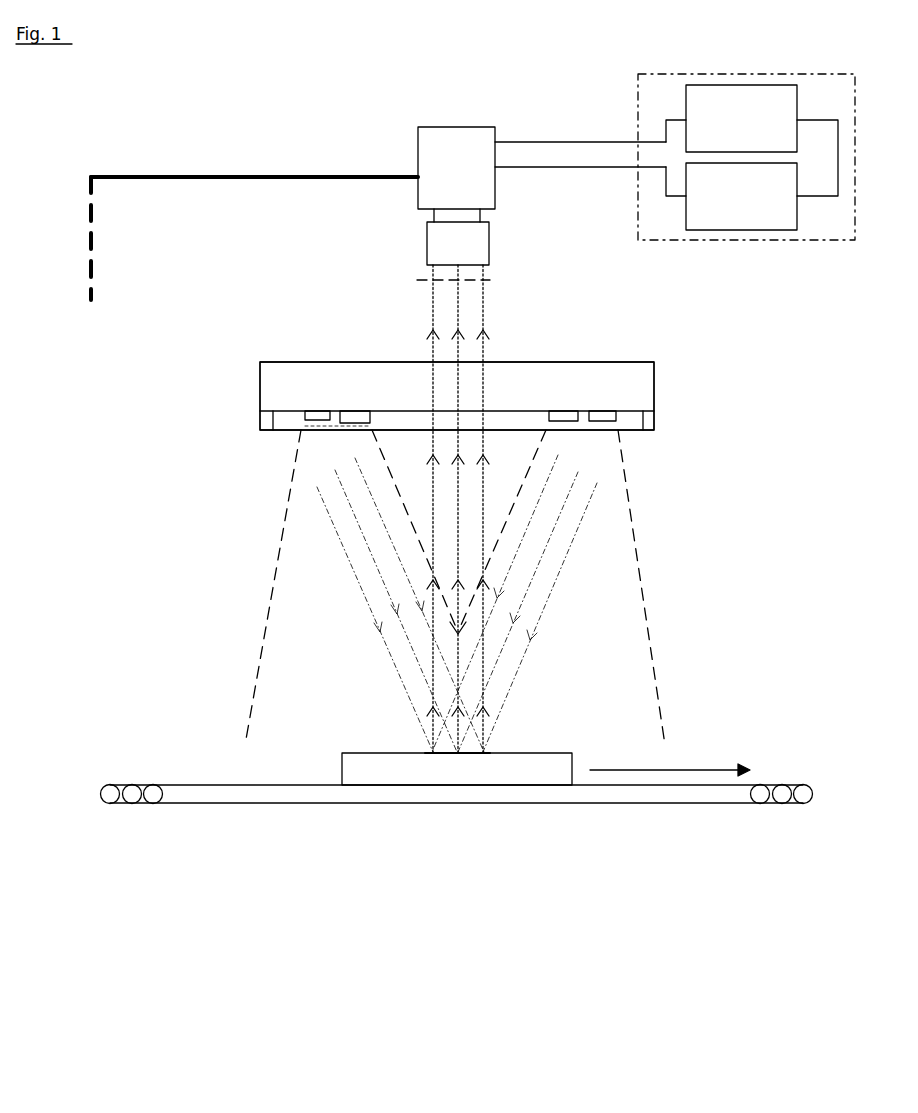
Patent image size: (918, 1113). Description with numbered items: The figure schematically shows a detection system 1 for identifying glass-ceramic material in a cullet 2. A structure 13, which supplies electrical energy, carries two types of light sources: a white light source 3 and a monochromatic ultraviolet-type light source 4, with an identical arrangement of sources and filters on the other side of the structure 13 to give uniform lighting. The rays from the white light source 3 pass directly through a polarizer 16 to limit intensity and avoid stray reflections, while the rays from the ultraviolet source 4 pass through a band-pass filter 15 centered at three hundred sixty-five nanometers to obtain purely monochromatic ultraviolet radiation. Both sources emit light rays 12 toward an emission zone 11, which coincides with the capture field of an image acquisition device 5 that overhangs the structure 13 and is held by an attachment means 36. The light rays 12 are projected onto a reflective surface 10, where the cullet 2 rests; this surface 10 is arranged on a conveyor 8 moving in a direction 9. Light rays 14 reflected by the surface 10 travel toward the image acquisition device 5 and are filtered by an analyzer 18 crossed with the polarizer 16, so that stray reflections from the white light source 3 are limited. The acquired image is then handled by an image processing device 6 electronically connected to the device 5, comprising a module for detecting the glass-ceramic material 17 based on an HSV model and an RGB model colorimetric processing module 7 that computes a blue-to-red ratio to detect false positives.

The detection system 1 is at (455, 848).
The cullet 2 is at (430, 748).
The white light source 3 is at (313, 410).
The monochromatic ultraviolet-type light source 4 is at (260, 412).
The image acquisition device 5 is at (418, 150).
The image processing device 6 is at (638, 113).
The RGB model colorimetric processing module 7 is at (741, 196).
The conveyor 8 is at (693, 803).
The direction 9 is at (707, 770).
The reflective surface 10 is at (387, 770).
The emission zone 11 is at (463, 728).
The light rays 12 is at (340, 542).
The structure 13 is at (290, 362).
The light rays 14 is at (428, 350).
The band-pass filter 15 is at (298, 430).
The polarizer 16 is at (342, 427).
The module for detecting the glass-ceramic material 17 is at (741, 118).
The analyzer 18 is at (495, 280).
The attachment means 36 is at (160, 177).